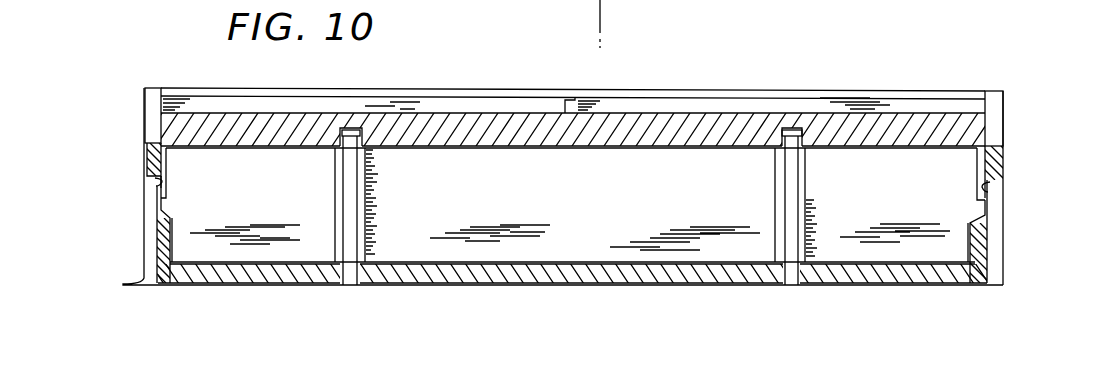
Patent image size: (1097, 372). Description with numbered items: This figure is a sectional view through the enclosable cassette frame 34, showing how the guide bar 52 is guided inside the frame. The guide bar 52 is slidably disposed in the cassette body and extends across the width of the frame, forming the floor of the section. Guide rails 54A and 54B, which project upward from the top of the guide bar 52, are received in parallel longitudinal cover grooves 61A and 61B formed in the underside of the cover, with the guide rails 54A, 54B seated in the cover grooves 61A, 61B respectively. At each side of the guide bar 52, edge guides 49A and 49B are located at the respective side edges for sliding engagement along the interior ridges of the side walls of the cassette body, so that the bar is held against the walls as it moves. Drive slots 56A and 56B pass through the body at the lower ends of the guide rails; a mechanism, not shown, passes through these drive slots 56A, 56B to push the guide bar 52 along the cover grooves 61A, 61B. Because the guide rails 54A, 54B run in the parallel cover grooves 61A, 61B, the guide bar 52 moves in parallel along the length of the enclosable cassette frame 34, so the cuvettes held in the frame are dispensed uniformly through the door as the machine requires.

The enclosable cassette frame 34 is at (122, 87).
The guide bar 52 is at (667, 258).
The guide rail 54A is at (799, 129).
The guide rail 54B is at (352, 128).
The cover groove 61A is at (782, 131).
The cover groove 61B is at (397, 107).
The drive slot 56A is at (788, 277).
The drive slot 56B is at (353, 273).
The edge guide 49A is at (985, 198).
The edge guide 49B is at (150, 198).